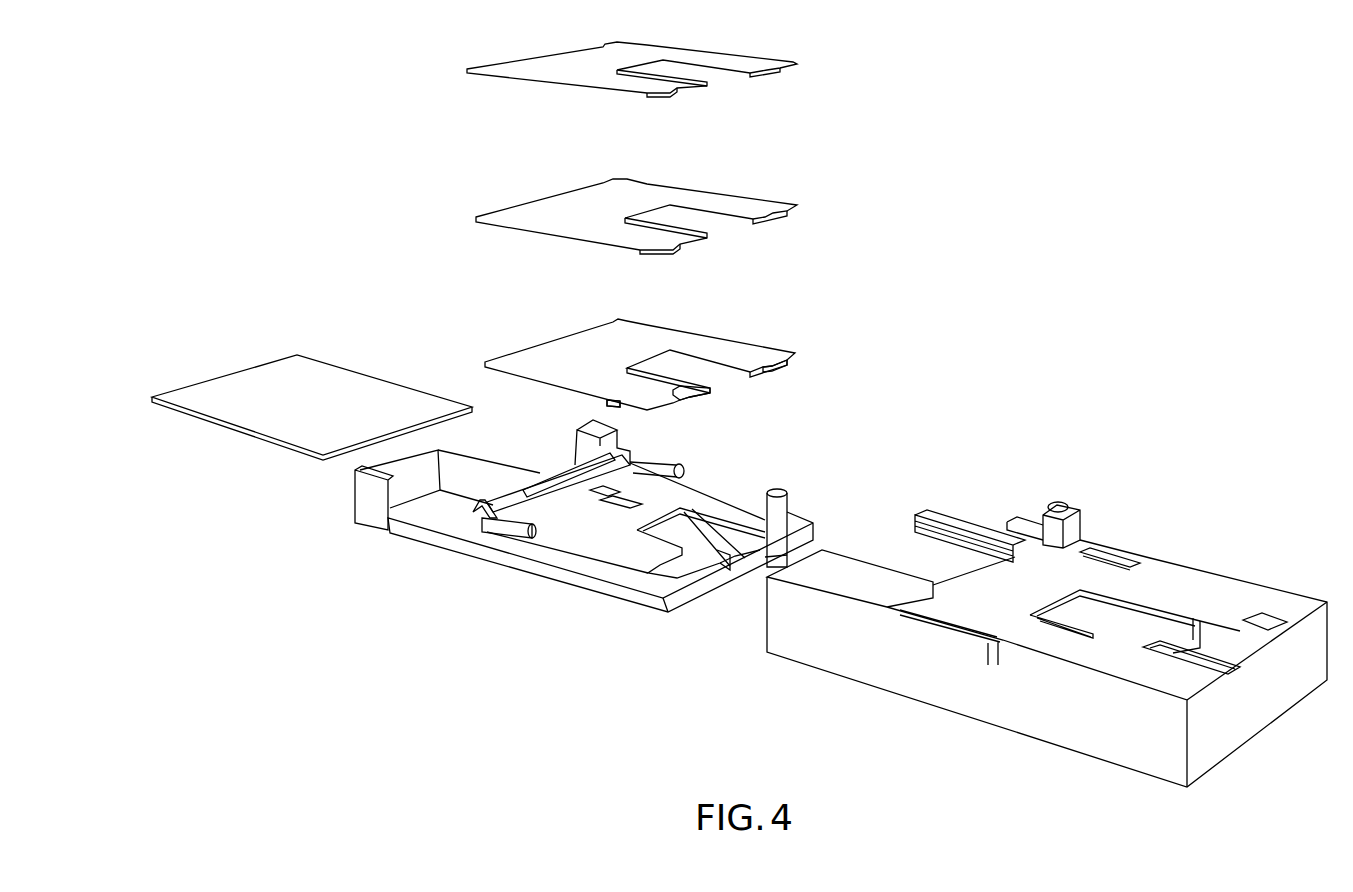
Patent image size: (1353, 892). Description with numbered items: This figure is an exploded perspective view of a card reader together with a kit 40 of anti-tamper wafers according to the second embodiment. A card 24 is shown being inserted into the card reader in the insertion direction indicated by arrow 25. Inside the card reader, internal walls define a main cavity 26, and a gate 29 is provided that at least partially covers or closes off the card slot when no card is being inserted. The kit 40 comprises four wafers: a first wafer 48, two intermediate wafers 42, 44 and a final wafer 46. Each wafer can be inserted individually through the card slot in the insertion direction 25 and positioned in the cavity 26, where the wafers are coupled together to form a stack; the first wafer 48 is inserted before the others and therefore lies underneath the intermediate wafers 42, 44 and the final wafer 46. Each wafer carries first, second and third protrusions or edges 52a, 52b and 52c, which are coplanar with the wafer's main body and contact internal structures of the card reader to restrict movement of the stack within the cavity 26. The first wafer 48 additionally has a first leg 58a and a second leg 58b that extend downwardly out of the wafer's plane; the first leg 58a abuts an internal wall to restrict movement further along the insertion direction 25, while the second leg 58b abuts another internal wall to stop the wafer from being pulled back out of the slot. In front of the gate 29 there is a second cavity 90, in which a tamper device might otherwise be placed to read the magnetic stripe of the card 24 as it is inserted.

The card 24 is at (213, 423).
The insertion direction 25 is at (178, 350).
The cavity 26 is at (587, 562).
The gate 29 is at (487, 538).
The kit 40 is at (911, 45).
The intermediate wafer 42 is at (797, 355).
The intermediate wafer 44 is at (798, 207).
The final wafer 46 is at (797, 62).
The first wafer 48 is at (800, 513).
The first protrusion 52a is at (687, 400).
The second protrusion 52b is at (713, 392).
The third protrusion 52c is at (787, 363).
The first leg 58a is at (728, 568).
The second leg 58b is at (573, 460).
The second cavity 90 is at (440, 500).